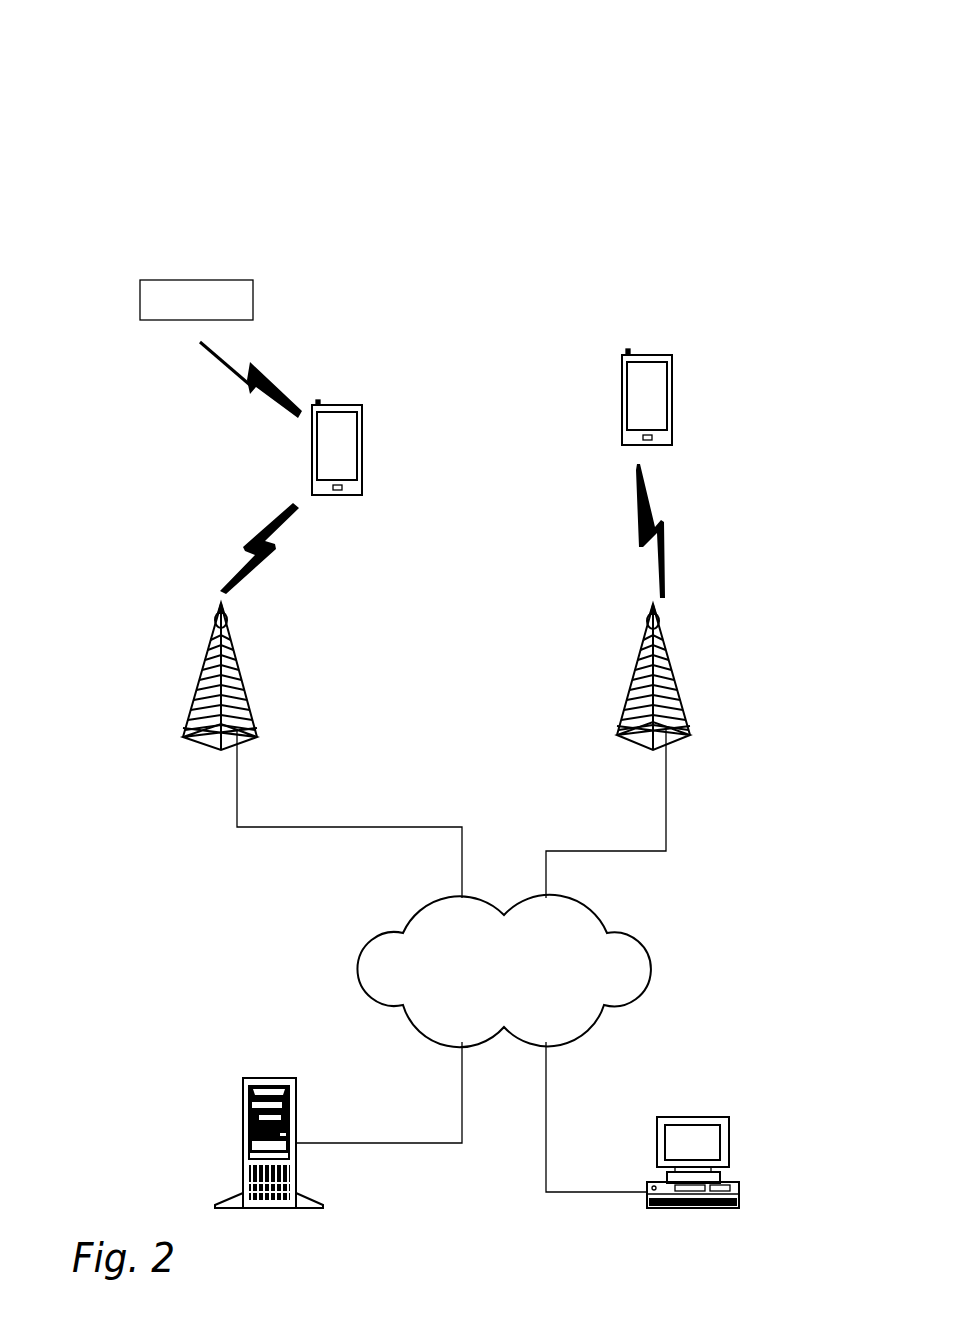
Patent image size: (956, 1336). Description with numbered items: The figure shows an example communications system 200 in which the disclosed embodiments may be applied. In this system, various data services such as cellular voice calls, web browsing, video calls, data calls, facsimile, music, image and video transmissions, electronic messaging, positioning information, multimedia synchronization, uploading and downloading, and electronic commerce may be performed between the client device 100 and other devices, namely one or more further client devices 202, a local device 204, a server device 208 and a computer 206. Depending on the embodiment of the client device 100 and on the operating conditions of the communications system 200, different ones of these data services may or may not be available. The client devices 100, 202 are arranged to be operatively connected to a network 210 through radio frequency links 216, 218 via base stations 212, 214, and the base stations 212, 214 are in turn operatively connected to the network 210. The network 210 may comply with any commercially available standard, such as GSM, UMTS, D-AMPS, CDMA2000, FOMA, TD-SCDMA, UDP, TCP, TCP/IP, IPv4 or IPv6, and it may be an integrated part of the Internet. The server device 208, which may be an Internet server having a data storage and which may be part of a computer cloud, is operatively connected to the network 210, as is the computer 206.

The communications system 200 is at (158, 64).
The local device 204 is at (140, 298).
The radio frequency link 218 is at (229, 368).
The client device 100 is at (337, 405).
The further client device 202 is at (647, 353).
The radio frequency link 216 is at (250, 544).
The base station 212 is at (245, 687).
The base station 214 is at (675, 678).
The network 210 is at (483, 984).
The server device 208 is at (241, 1088).
The computer 206 is at (693, 1117).